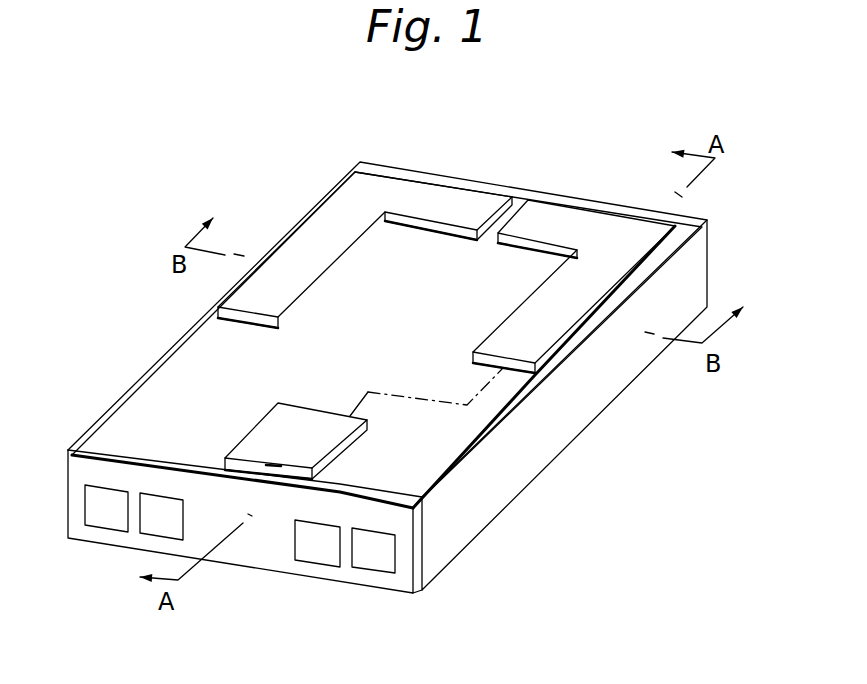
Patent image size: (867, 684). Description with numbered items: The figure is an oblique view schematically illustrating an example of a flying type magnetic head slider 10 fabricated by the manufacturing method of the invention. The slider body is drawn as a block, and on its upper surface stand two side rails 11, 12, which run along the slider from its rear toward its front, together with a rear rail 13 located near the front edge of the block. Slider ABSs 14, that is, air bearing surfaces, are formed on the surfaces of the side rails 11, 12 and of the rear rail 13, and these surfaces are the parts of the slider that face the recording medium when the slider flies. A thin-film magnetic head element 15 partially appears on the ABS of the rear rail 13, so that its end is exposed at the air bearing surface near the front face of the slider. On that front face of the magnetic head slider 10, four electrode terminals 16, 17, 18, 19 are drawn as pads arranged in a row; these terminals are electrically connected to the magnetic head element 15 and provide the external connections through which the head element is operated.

The magnetic head slider 10 is at (456, 150).
The side rail 11 is at (328, 259).
The side rail 12 is at (588, 307).
The rear rail 13 is at (322, 452).
The slider ABS 14 is at (333, 217).
The thin-film magnetic head element 15 is at (271, 468).
The electrode terminal 16 is at (108, 520).
The electrode terminal 17 is at (158, 525).
The electrode terminal 18 is at (317, 553).
The electrode terminal 19 is at (377, 560).